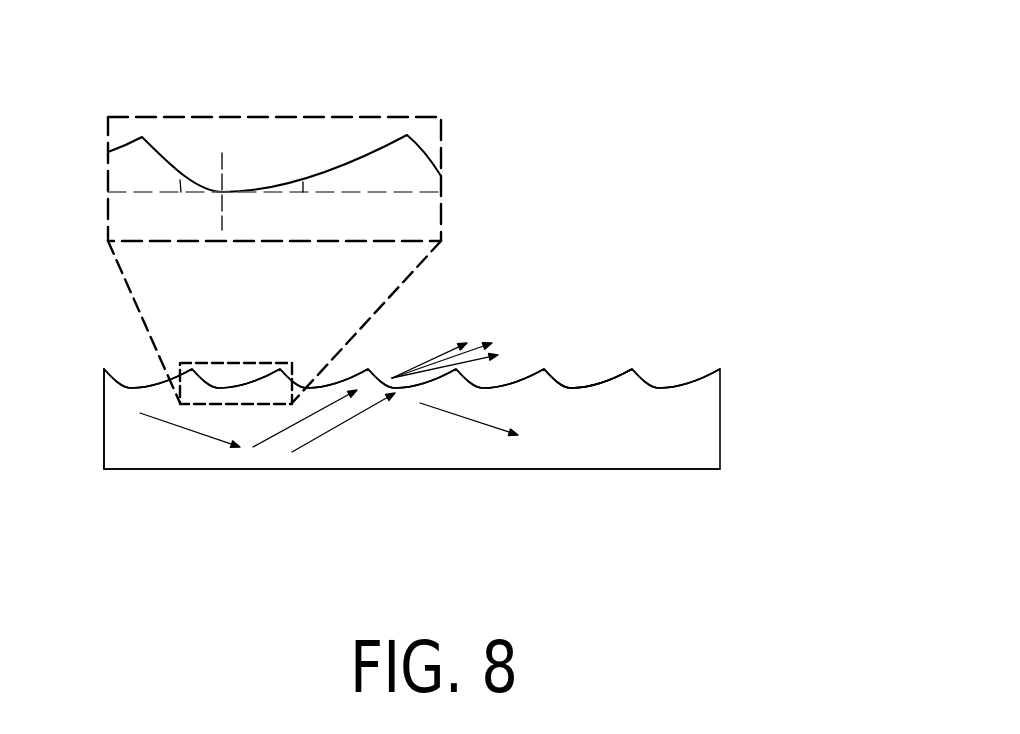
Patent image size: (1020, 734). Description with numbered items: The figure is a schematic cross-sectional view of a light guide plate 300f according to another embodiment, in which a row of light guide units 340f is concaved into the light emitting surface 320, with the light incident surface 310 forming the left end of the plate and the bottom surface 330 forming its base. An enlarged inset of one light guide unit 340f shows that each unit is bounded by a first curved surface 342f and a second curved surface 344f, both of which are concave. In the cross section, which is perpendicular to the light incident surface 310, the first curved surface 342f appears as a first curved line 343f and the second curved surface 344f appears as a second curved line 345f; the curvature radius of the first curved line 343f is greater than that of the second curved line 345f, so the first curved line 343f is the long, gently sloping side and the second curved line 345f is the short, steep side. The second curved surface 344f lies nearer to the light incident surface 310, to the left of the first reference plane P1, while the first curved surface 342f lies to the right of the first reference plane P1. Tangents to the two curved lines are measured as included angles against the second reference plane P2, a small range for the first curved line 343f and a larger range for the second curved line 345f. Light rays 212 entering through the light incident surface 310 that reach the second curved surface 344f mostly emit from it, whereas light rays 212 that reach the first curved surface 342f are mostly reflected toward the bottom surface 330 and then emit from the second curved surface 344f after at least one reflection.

The light guide plate 300f is at (737, 551).
The light incident surface 310 is at (104, 415).
The light emitting surface 320 is at (688, 368).
The bottom surface 330 is at (703, 470).
The light guide unit 340f is at (210, 387).
The first curved surface 342f is at (603, 378).
The second curved surface 344f is at (552, 378).
The first curved line 343f is at (378, 148).
The second curved line 345f is at (158, 160).
The light rays 212 is at (172, 427).
The first reference plane P1 is at (223, 222).
The second reference plane P2 is at (416, 193).